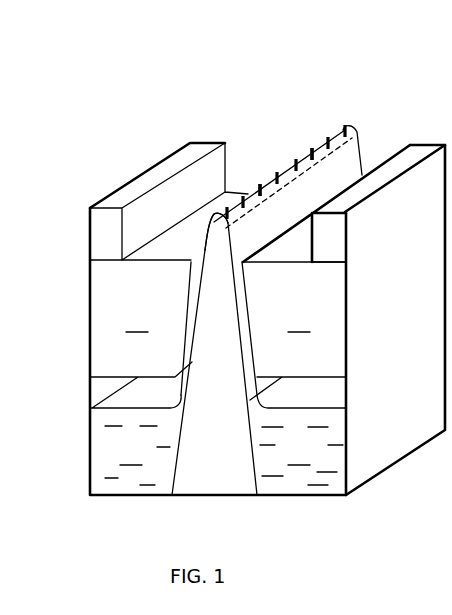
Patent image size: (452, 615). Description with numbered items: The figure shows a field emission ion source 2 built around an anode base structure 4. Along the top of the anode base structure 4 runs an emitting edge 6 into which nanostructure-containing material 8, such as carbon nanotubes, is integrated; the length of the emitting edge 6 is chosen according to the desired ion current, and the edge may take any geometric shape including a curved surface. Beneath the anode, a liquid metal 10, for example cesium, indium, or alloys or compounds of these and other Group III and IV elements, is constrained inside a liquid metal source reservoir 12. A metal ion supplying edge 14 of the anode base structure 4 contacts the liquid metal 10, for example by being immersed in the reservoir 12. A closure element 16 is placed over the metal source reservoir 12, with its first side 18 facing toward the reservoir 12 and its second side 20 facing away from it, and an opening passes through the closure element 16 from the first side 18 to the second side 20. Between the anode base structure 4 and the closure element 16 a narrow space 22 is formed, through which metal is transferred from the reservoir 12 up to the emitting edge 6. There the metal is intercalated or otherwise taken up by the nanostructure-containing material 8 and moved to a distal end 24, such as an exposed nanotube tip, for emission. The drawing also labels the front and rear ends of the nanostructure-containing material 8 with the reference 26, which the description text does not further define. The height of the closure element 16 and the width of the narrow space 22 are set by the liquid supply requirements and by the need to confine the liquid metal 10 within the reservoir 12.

The field emission ion source 2 is at (222, 77).
The anode base structure 4 is at (350, 160).
The emitting edge 6 is at (277, 176).
The nanostructure-containing material 8 is at (243, 200).
The liquid metal 10 is at (224, 455).
The liquid metal source reservoir 12 is at (121, 481).
The metal ion supplying edge 14 is at (207, 432).
The closure element 16 is at (218, 296).
The first side 18 is at (112, 378).
The second side 20 is at (148, 253).
The narrow space 22 is at (190, 342).
The distal end 24 is at (260, 182).
The liner peak ends 26 is at (216, 241).